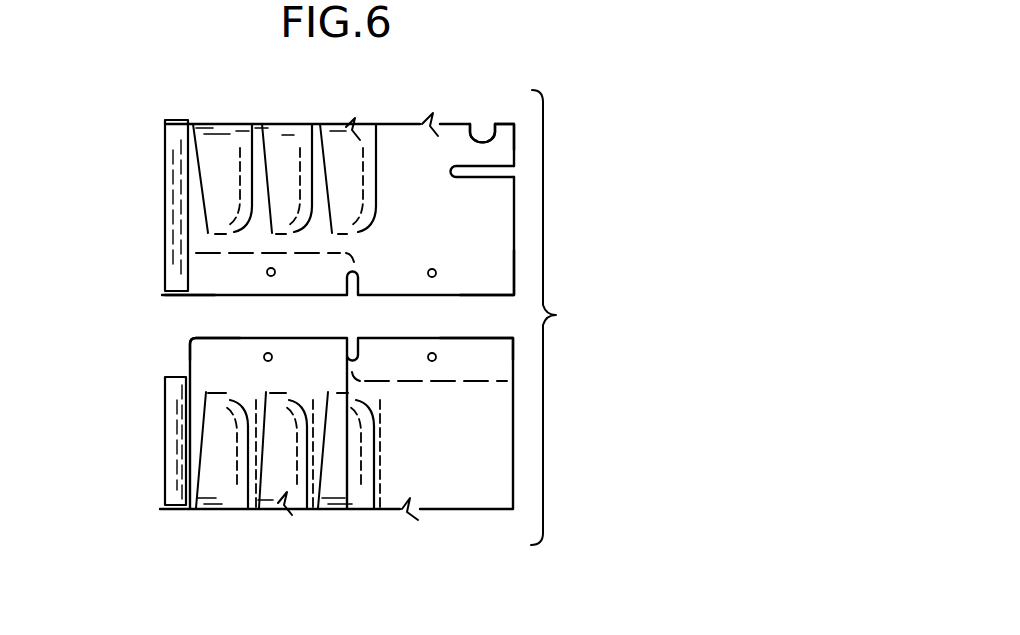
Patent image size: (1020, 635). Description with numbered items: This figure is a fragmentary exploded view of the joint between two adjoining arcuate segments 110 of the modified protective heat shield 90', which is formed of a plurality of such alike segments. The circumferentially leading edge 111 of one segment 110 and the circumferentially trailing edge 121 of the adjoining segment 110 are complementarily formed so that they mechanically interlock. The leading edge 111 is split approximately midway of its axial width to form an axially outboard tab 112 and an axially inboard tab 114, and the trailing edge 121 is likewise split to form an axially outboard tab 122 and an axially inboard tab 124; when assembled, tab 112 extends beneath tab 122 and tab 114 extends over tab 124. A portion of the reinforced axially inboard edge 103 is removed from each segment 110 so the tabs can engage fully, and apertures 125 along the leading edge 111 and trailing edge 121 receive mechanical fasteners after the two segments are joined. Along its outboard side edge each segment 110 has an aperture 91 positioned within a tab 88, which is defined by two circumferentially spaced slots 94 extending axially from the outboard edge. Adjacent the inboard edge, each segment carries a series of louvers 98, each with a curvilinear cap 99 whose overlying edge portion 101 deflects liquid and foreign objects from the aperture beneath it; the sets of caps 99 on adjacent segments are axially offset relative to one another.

The tab 88 is at (517, 133).
The modified protective heat shield 90' is at (565, 317).
The aperture 91 is at (488, 134).
The slots 94 is at (490, 167).
The louver 98 is at (350, 141).
The cap 99 is at (325, 121).
The overlying edge portion 101 is at (165, 122).
The reinforcing edge 103 is at (165, 151).
The arcuate segment 110 is at (513, 202).
The circumferentially leading edge 111 is at (207, 293).
The axially outboard tab 112 is at (482, 286).
The axially inboard tab 114 is at (212, 269).
The circumferentially trailing edge 121 is at (208, 338).
The axially outboard tab 122 is at (462, 341).
The axially inboard tab 124 is at (221, 350).
The apertures 125 is at (268, 270).